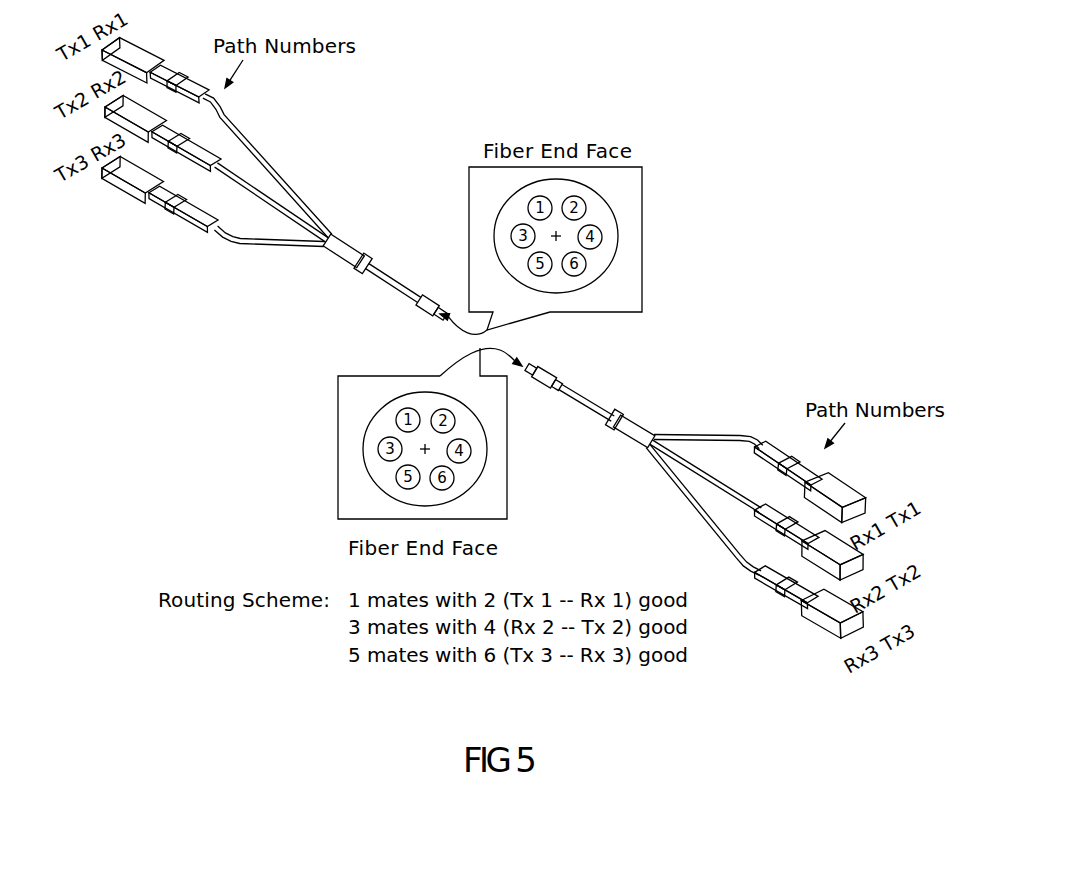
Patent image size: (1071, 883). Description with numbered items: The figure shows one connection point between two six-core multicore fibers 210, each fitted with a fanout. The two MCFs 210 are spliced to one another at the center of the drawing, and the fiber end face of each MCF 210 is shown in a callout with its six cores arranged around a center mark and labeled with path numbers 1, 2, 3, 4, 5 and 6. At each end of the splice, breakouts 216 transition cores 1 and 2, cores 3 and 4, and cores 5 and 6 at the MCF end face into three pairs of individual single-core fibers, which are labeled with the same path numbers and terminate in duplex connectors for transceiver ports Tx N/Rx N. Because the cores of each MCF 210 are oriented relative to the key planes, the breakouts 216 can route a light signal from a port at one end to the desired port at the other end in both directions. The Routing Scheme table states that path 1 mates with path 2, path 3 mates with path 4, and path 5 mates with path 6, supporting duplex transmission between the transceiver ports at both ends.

The six-core MCF 210 is at (407, 288).
The breakouts 216 is at (485, 339).
The fiber core/single core fiber # 1 is at (479, 275).
The fiber core/single core fiber # 2 is at (483, 278).
The fiber core/single core fiber # 3 is at (480, 340).
The fiber core/single core fiber # 4 is at (484, 342).
The fiber core/single core fiber # 5 is at (717, 390).
The fiber core/single core fiber # 6 is at (483, 403).